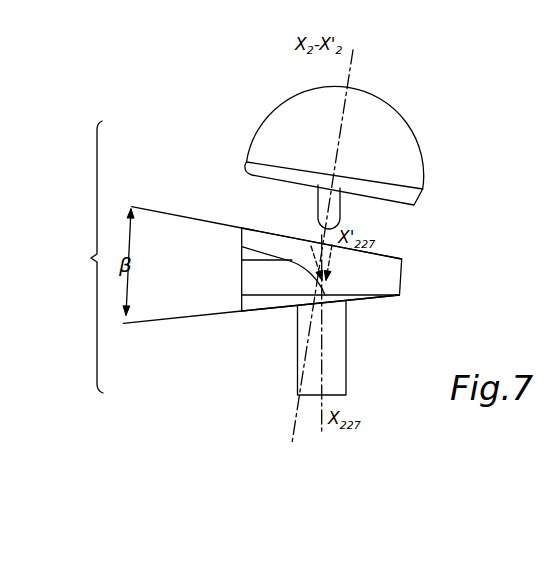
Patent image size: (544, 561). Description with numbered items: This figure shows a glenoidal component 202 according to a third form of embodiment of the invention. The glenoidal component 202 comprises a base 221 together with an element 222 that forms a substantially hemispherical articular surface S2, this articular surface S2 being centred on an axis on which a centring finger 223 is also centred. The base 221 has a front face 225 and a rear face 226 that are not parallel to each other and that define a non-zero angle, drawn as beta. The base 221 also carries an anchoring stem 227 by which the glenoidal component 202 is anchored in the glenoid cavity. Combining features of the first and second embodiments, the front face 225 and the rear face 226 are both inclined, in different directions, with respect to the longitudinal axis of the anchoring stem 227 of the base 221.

The glenoidal component 202 is at (79, 257).
The base 221 is at (394, 281).
The element 222 is at (408, 163).
The centring finger 223 is at (318, 194).
The front face 225 is at (387, 253).
The rear face 226 is at (374, 303).
The anchoring stem 227 is at (338, 347).
The articular surface S2 is at (390, 105).